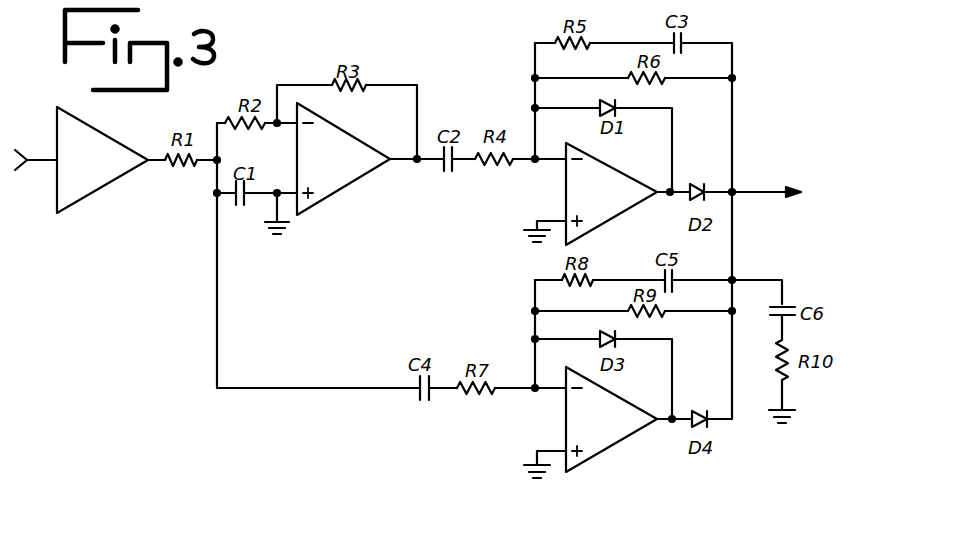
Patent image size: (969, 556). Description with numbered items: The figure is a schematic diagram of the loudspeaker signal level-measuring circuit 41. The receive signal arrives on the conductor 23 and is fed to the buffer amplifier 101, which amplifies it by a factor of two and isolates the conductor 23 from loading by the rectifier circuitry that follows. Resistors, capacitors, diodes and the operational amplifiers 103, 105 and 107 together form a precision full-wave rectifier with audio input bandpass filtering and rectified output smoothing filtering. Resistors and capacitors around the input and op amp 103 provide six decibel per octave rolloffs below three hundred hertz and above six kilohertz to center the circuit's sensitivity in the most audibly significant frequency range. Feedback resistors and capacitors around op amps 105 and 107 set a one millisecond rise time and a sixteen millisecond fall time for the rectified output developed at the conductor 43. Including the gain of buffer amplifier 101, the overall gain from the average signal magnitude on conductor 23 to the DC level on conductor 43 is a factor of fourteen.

The conductor 23 is at (38, 160).
The buffer amplifier 101 is at (128, 147).
The loudspeaker signal level-measuring circuit 41 is at (210, 115).
The operational amplifier 103 is at (346, 187).
The operational amplifier 105 is at (622, 212).
The operational amplifier 107 is at (624, 438).
The conductor 43 is at (764, 191).